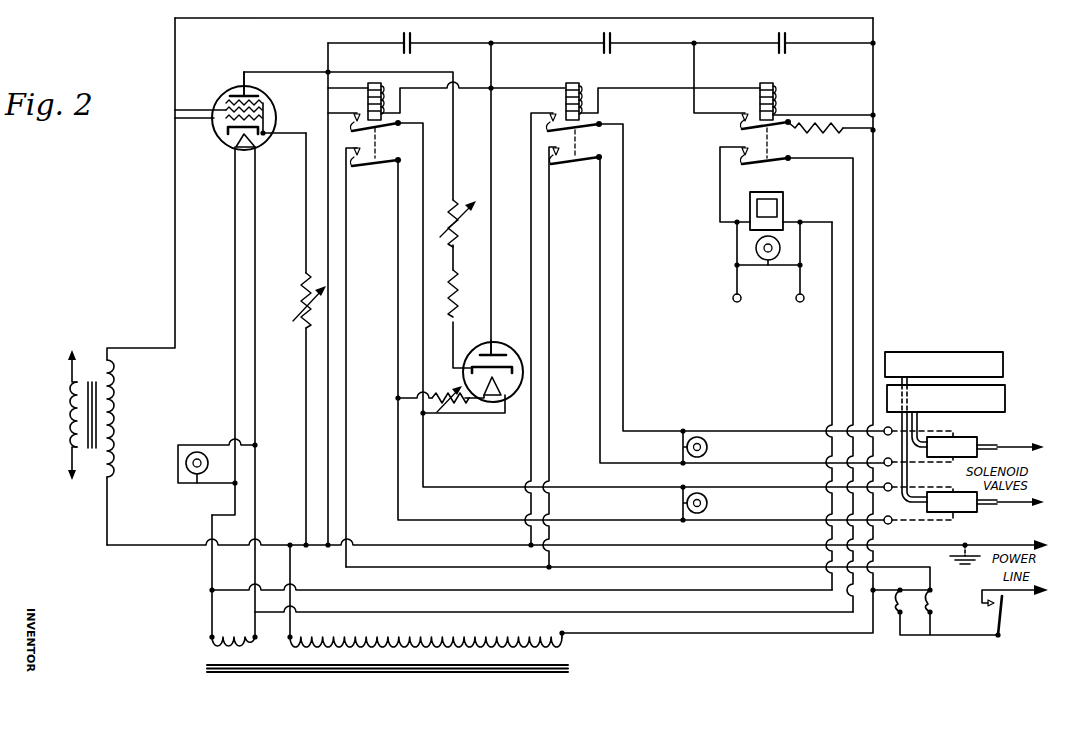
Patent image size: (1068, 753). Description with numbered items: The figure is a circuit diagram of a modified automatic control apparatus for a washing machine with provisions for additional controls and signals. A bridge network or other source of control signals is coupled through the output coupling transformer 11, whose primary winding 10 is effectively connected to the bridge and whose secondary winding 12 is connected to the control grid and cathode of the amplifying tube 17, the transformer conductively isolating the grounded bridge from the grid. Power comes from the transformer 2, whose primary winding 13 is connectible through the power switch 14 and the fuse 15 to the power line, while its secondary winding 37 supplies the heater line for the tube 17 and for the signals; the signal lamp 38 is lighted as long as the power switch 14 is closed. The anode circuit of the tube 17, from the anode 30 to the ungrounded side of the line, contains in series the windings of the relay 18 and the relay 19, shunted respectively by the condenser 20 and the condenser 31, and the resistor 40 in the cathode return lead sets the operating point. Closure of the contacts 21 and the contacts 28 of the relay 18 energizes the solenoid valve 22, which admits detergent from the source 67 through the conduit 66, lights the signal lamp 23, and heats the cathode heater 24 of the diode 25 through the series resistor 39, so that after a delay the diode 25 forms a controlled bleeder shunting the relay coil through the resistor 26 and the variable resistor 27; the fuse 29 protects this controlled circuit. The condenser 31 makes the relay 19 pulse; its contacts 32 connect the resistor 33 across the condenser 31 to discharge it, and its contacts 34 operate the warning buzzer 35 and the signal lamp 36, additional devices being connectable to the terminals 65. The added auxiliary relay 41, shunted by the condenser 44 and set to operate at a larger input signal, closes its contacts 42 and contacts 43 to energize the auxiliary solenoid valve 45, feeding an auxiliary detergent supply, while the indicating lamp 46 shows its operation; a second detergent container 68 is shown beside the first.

The transformer 2 is at (278, 650).
The primary winding 10 is at (69, 421).
The output coupling transformer 11 is at (87, 358).
The secondary winding 12 is at (118, 415).
The primary winding 13 is at (482, 650).
The power switch 14 is at (997, 621).
The fuse 15 is at (906, 590).
The amplifying tube 17 is at (229, 95).
The relay 18 is at (362, 100).
The relay 19 is at (788, 94).
The condenser 20 is at (401, 41).
The contacts 21 is at (344, 128).
The solenoid valve 22 is at (980, 514).
The signal lamp 23 is at (707, 503).
The cathode heater 24 is at (505, 410).
The diode 25 is at (501, 349).
The resistor 26 is at (457, 309).
The variable resistor 27 is at (457, 241).
The contacts 28 is at (354, 168).
The fuse 29 is at (941, 590).
The anode 30 is at (248, 86).
The condenser 31 is at (788, 39).
The contacts 32 is at (733, 128).
The resistor 33 is at (811, 137).
The contacts 34 is at (738, 165).
The warning buzzer 35 is at (785, 205).
The signal lamp 36 is at (781, 263).
The secondary winding 37 is at (254, 638).
The signal lamp 38 is at (216, 461).
The series resistor 39 is at (452, 396).
The resistor 40 is at (302, 299).
The auxiliary relay 41 is at (560, 100).
The contacts 42 is at (540, 128).
The contacts 43 is at (549, 161).
The condenser 44 is at (600, 41).
The auxiliary solenoid valve 45 is at (978, 441).
The indicating lamp 46 is at (708, 447).
The terminals 65 is at (796, 302).
The conduit / auxiliary source of detergent 66 is at (903, 500).
The source 67 is at (967, 340).
The detergent dispenser 68 is at (1006, 399).